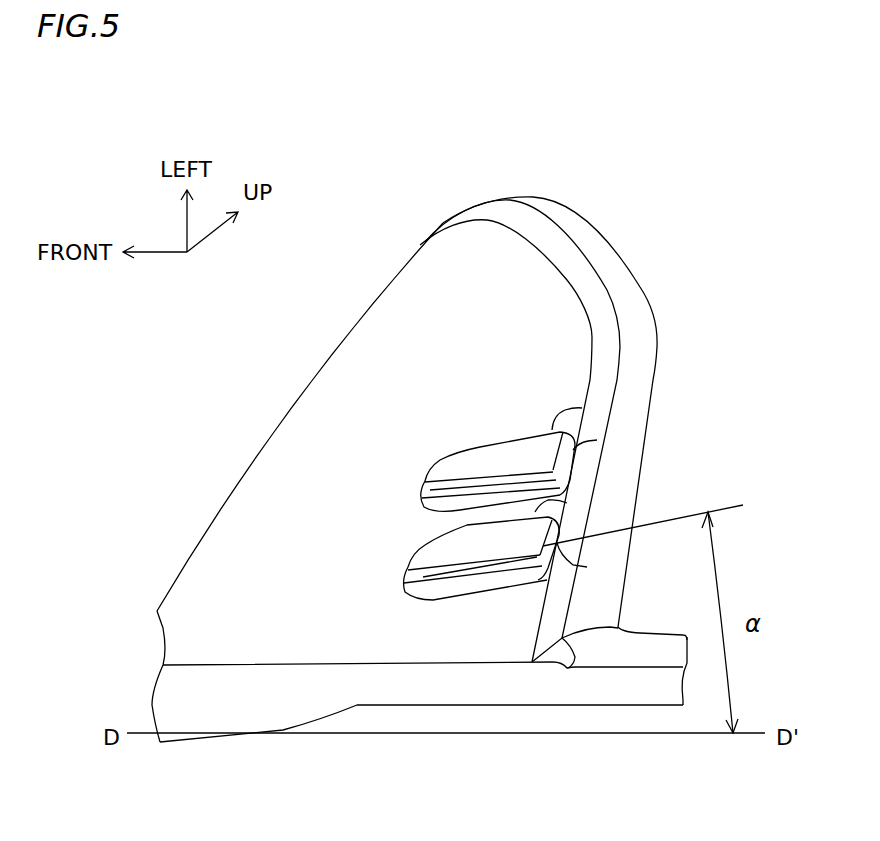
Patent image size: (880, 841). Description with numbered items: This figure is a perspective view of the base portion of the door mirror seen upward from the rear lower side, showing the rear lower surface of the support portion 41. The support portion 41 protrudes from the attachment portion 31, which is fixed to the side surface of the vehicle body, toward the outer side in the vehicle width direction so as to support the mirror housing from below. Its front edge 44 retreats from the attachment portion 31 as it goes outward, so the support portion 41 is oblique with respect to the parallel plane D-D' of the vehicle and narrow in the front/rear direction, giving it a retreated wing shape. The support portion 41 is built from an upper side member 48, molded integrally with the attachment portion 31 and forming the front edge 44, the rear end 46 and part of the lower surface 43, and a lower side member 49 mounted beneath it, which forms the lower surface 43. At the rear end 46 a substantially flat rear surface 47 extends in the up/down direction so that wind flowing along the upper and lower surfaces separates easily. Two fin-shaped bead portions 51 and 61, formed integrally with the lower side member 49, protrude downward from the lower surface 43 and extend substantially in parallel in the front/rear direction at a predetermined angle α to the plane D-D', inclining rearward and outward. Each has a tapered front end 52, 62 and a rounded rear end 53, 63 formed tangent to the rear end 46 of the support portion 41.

The attachment portion 31 is at (237, 710).
The support portion 41 is at (255, 418).
The lower surface 43 is at (448, 263).
The front edge 44 is at (312, 377).
The rear end 46 is at (602, 460).
The rear surface 47 is at (635, 365).
The upper side member 48 is at (587, 222).
The lower side member 49 is at (247, 512).
The bead portion 51 is at (582, 408).
The front end 52 is at (422, 473).
The rear end 53 is at (597, 440).
The bead portion 61 is at (567, 503).
The front end 62 is at (405, 577).
The rear end 63 is at (587, 567).